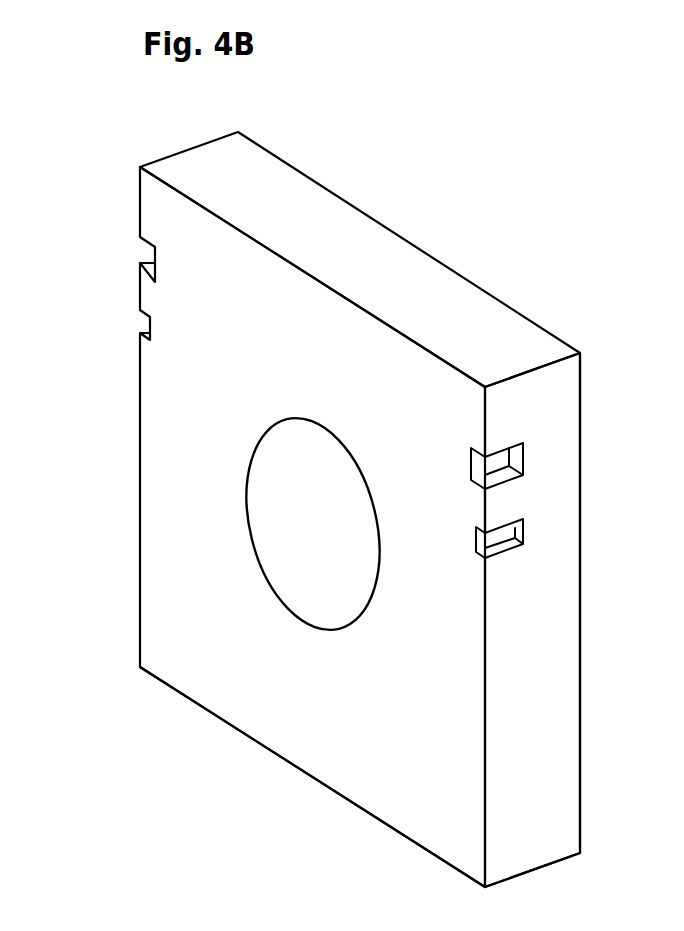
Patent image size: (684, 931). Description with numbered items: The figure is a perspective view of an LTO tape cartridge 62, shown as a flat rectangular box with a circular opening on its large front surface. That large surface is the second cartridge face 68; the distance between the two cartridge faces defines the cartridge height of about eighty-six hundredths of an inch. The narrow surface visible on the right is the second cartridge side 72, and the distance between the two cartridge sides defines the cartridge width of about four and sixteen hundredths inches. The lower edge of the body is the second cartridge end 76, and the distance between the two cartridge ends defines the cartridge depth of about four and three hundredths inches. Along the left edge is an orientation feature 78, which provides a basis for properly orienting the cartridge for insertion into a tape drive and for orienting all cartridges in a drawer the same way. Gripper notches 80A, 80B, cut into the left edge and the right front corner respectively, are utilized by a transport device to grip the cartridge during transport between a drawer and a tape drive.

The LTO tape cartridge 62 is at (443, 248).
The second cartridge face 68 is at (380, 768).
The second cartridge side 72 is at (553, 598).
The second cartridge end 76 is at (292, 778).
The orientation feature 78 is at (70, 430).
The gripper notch 80A is at (135, 262).
The gripper notch 80B is at (515, 458).